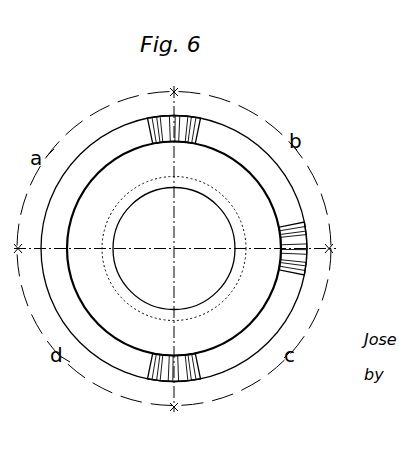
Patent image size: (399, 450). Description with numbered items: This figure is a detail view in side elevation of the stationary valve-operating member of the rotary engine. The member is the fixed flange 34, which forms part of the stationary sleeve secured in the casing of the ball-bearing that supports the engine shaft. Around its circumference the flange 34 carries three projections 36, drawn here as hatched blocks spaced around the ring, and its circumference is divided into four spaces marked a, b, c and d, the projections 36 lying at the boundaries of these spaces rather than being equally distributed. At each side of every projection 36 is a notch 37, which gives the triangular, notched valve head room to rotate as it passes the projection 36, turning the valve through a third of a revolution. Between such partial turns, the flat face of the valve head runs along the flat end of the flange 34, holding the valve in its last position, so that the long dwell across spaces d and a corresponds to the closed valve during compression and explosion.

The flange 34 is at (65, 196).
The projections 36 is at (177, 120).
The notches 37 is at (157, 141).